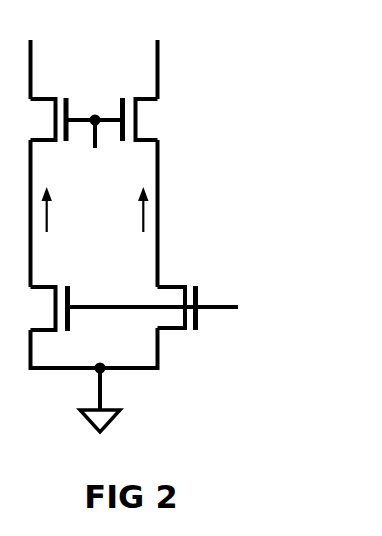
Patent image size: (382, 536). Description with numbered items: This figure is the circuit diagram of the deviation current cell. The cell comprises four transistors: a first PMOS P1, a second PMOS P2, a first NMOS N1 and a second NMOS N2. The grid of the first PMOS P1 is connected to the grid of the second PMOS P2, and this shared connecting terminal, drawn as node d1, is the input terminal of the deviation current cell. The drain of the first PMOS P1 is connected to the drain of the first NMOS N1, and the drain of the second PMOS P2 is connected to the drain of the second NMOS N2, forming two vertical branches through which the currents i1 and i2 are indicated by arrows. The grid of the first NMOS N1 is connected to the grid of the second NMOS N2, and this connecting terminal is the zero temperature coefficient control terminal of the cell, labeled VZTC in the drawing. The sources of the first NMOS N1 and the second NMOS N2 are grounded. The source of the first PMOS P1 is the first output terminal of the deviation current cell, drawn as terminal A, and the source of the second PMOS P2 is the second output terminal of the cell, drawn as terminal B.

The input terminal A is at (32, 53).
The input terminal B is at (153, 53).
The first PMOS P1 is at (34, 119).
The second PMOS P2 is at (156, 119).
The gate node d1 is at (94, 152).
The first current i1 is at (26, 210).
The second current i2 is at (168, 210).
The first NMOS N1 is at (57, 290).
The second NMOS N2 is at (187, 289).
The zero temperature coefficient bias voltage VZTC is at (187, 307).